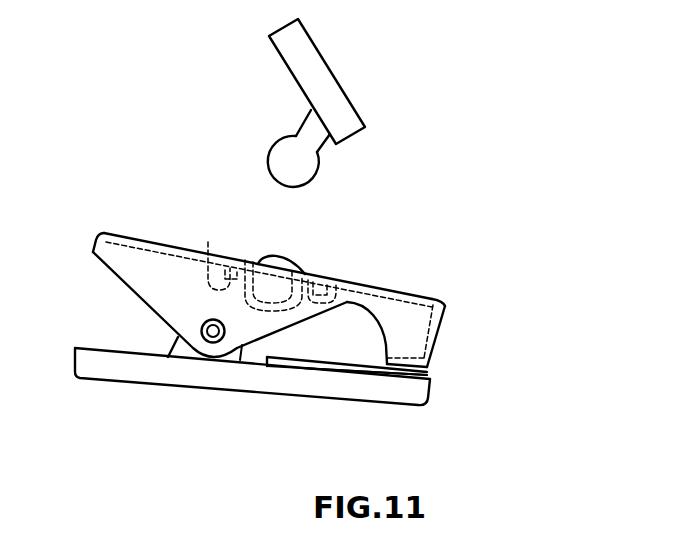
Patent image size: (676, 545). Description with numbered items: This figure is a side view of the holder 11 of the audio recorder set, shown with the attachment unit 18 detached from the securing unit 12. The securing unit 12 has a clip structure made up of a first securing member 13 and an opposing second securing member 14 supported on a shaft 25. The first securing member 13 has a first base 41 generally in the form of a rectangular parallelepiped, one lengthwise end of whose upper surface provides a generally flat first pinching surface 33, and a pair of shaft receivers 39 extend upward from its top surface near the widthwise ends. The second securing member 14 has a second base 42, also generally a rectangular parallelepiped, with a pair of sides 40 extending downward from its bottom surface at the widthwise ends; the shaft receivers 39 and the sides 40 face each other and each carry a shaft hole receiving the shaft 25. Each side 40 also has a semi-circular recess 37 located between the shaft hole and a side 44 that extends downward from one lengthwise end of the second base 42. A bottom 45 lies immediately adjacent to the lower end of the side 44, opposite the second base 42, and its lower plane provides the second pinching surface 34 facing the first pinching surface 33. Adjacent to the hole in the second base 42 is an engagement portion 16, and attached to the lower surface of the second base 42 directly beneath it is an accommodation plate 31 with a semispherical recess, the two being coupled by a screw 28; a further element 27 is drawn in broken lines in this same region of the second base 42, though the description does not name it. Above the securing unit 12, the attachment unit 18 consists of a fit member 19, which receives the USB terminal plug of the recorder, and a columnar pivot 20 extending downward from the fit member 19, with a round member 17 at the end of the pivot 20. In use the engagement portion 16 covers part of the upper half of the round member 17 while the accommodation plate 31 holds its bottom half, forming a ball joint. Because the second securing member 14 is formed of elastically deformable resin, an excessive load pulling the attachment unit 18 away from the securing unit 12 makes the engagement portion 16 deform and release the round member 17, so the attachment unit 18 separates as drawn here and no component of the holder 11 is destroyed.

The holder 11 is at (577, 3).
The securing unit 12 is at (514, 327).
The first securing member 13 is at (430, 393).
The second securing member 14 is at (438, 337).
The engagement portion 16 is at (276, 255).
The round member 17 is at (277, 142).
The attachment unit 18 is at (217, 27).
The fit member 19 is at (277, 50).
The pivot 20 is at (303, 117).
The shaft 25 is at (215, 343).
The inner recess 27 is at (253, 262).
The screw 28 is at (207, 242).
The accommodation plate 31 is at (303, 282).
The first pinching surface 33 is at (410, 374).
The second pinching surface 34 is at (410, 376).
The semi-circular recess 37 is at (354, 304).
The shaft receiver 39 is at (178, 358).
The side 40 is at (123, 257).
The first base 41 is at (360, 387).
The second base 42 is at (98, 240).
The side 44 is at (444, 305).
The bottom 45 is at (432, 371).